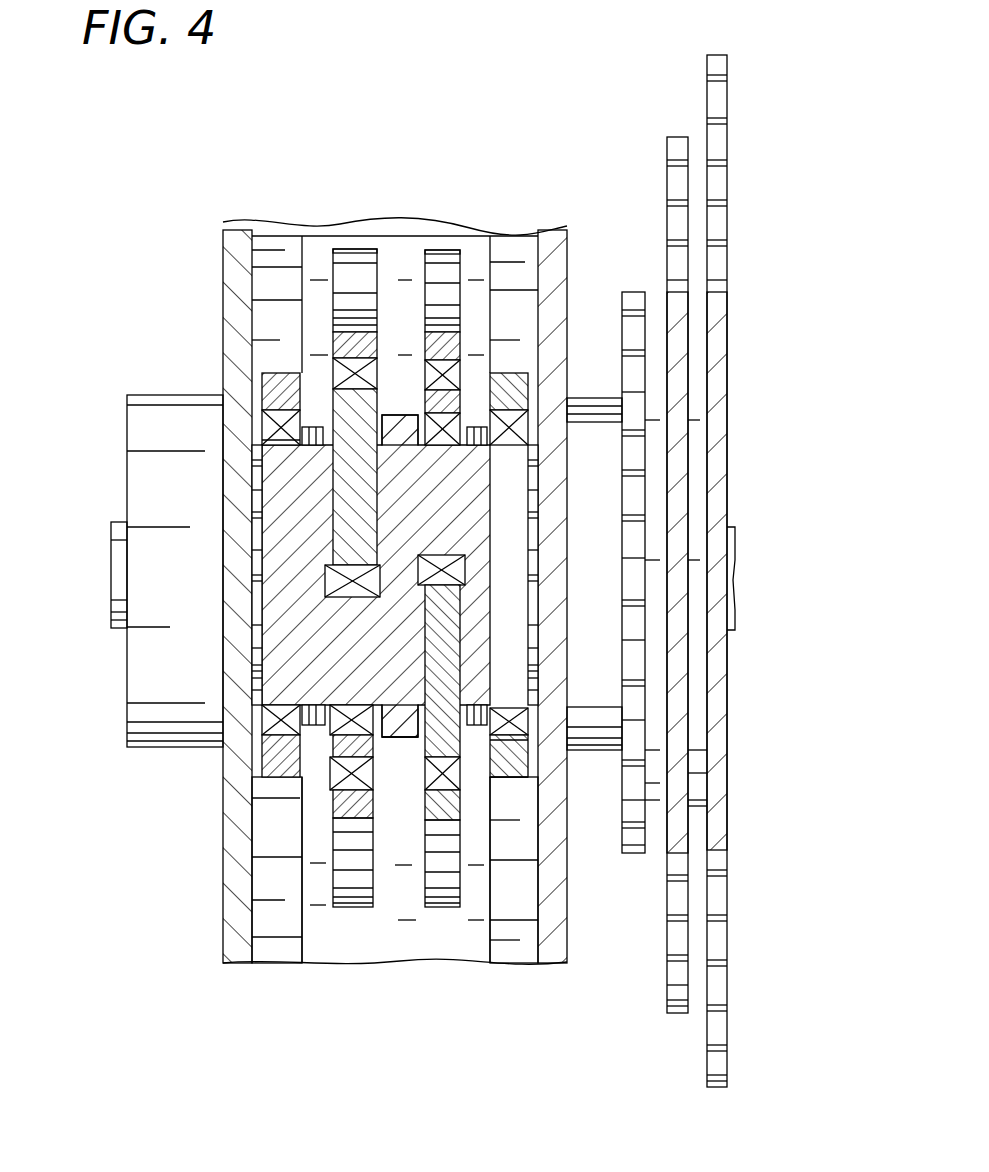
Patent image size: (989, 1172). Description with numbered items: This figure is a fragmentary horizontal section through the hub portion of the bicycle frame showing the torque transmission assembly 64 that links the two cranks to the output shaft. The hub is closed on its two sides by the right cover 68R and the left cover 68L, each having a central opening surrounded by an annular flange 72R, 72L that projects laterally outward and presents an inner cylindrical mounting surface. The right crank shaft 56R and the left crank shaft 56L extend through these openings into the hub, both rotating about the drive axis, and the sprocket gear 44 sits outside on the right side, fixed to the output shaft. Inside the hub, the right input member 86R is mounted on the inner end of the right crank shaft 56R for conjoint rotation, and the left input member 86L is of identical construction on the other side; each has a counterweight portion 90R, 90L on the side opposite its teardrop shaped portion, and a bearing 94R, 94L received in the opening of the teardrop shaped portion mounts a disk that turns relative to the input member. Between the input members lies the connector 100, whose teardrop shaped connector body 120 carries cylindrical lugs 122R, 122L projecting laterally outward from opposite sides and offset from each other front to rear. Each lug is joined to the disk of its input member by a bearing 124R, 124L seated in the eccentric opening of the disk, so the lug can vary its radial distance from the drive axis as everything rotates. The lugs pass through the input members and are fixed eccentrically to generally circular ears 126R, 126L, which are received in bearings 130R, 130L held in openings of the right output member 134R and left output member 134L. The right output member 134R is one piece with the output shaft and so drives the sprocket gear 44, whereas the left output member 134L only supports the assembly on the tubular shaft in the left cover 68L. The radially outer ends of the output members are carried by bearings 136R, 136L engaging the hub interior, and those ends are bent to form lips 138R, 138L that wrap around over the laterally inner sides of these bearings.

The sprocket gear 44 is at (672, 1030).
The left crank shaft 56L is at (118, 522).
The right crank shaft 56R is at (735, 545).
The torque transmission assembly 64 is at (336, 932).
The left cover 68L is at (225, 797).
The right cover 68R is at (572, 372).
The left annular flange 72L is at (135, 695).
The right annular flange 72R is at (590, 742).
The left input member 86L is at (352, 244).
The right input member 86R is at (430, 244).
The left counterweight portion 90L is at (362, 905).
The right counterweight portion 90R is at (430, 905).
The left bearing 94L is at (337, 770).
The right bearing 94R is at (443, 507).
The connector 100 is at (400, 752).
The connector body 120 is at (400, 425).
The left lug 122L is at (347, 622).
The right lug 122R is at (470, 450).
The left bearing 124L is at (265, 757).
The right bearing 124R is at (452, 572).
The left ear 126L is at (272, 553).
The right ear 126R is at (507, 518).
The left bearing 130L is at (265, 427).
The right bearing 130R is at (510, 740).
The left output member 134L is at (318, 428).
The right output member 134R is at (502, 790).
The left bearing 136L is at (267, 872).
The right bearing 136R is at (510, 935).
The left lips 138L is at (276, 362).
The right lips 138R is at (505, 400).